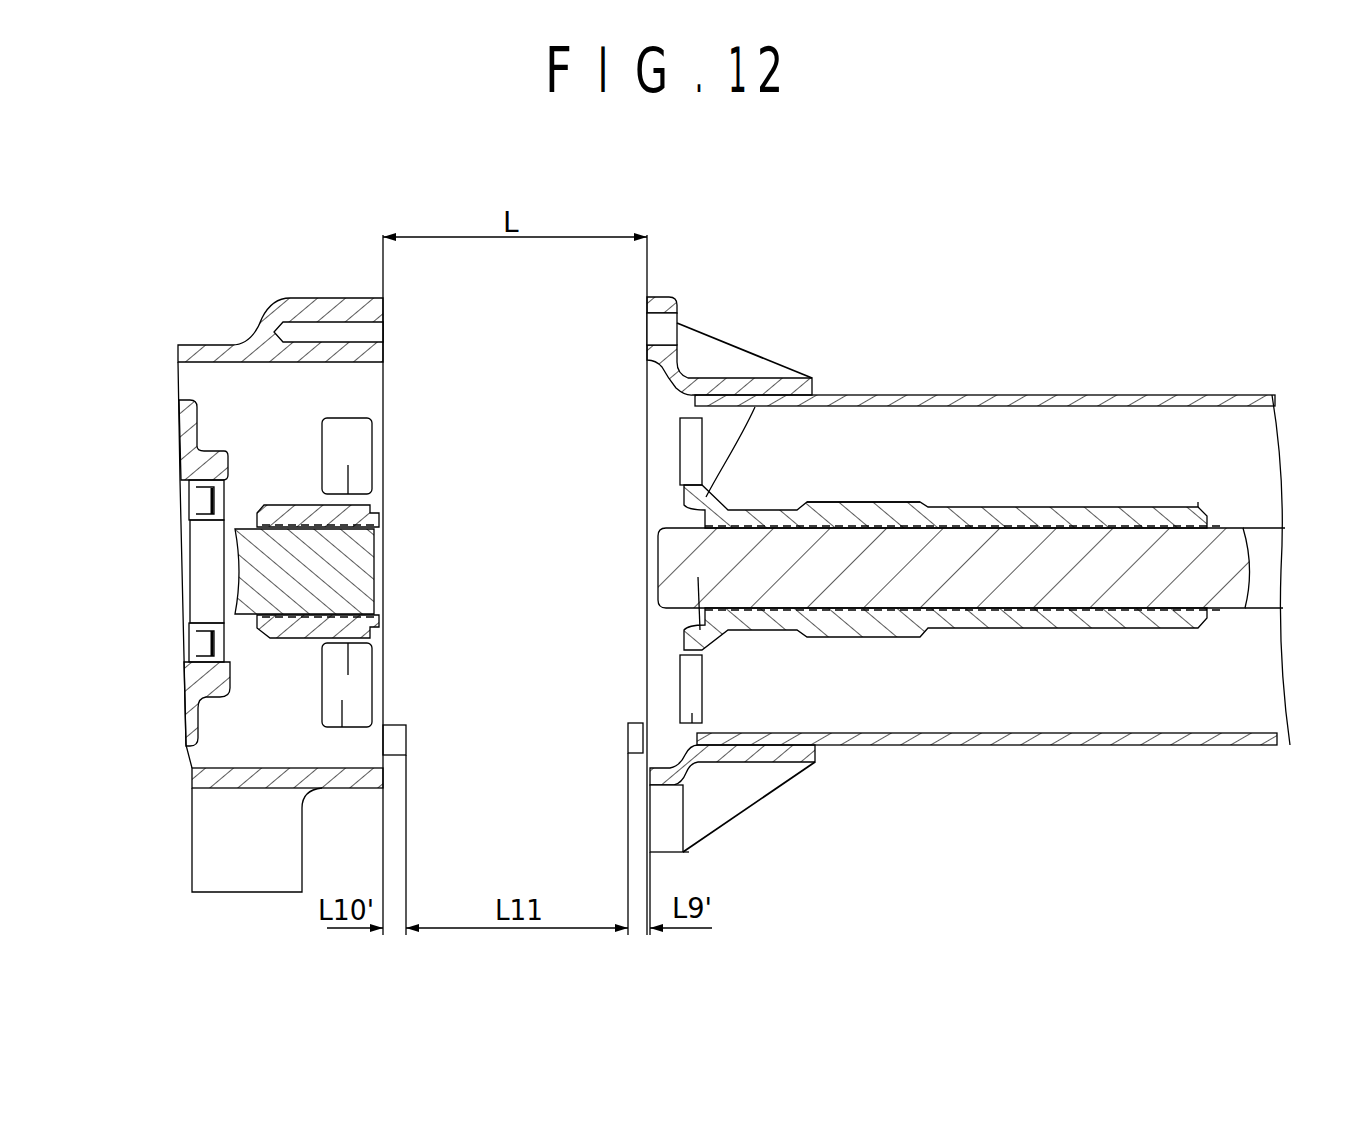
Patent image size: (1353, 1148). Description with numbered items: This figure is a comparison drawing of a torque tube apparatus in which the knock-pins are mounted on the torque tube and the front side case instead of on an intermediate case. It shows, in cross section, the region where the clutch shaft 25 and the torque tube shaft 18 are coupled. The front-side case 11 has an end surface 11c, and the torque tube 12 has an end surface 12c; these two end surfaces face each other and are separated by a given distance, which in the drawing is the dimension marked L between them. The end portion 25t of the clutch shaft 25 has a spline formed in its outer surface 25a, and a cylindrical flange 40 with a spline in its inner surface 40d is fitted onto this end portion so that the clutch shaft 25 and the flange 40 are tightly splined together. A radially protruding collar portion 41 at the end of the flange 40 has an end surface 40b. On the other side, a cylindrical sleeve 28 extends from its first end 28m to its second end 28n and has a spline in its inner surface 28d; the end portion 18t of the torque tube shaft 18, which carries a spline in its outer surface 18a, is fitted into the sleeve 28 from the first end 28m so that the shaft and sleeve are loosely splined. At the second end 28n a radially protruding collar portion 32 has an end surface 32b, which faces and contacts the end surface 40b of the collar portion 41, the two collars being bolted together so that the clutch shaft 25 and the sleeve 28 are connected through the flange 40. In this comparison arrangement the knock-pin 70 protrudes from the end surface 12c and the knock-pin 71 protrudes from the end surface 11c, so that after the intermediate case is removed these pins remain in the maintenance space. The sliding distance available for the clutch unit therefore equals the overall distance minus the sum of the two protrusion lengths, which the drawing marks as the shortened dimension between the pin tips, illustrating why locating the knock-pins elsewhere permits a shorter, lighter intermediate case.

The front-side case 11 is at (300, 316).
The end surface 11c is at (384, 350).
The flange 40 is at (322, 433).
The end surface 40b is at (373, 458).
The inner surface 40d is at (275, 597).
The collar portion 41 is at (342, 707).
The knock-pin 71 is at (393, 740).
The clutch shaft 25 is at (205, 545).
The outer surface 25a is at (288, 506).
The end portion 25t is at (347, 577).
The torque tube 12 is at (1000, 395).
The end surface 12c is at (647, 358).
The second end 28n is at (782, 378).
The inner surface 28d is at (845, 548).
The torque tube shaft 18 is at (1096, 558).
The outer surface 18a is at (673, 612).
The end portion 18t is at (705, 657).
The sleeve 28 is at (979, 632).
The first end 28m is at (1187, 630).
The knock-pin 70 is at (636, 737).
The collar portion 32 is at (703, 655).
The end surface 32b is at (690, 698).